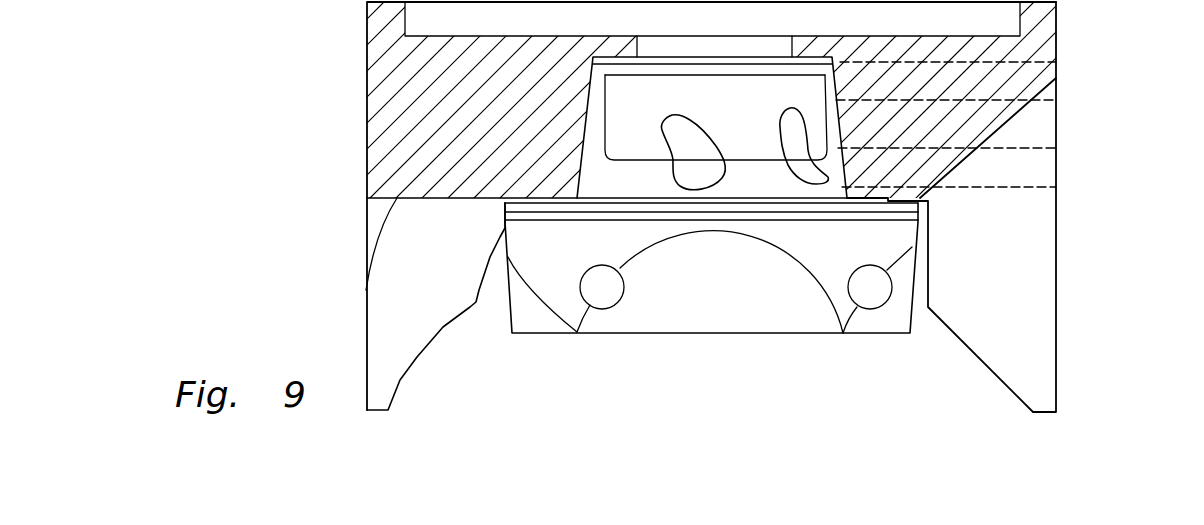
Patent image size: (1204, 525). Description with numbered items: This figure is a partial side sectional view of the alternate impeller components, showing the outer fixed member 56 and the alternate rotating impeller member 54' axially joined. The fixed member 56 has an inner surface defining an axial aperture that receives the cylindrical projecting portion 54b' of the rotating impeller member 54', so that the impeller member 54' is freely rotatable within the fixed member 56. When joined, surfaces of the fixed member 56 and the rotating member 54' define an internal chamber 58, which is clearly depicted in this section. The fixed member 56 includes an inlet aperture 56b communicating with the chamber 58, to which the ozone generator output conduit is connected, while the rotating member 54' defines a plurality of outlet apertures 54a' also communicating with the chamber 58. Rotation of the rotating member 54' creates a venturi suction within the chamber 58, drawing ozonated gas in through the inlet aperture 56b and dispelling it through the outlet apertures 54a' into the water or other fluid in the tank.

The outer fixed member 56 is at (365, 220).
The inlet aperture 56b is at (1058, 123).
The internal chamber 58 is at (590, 160).
The cylindrical projecting portion 54b' is at (744, 139).
The rotating impeller member 54' is at (711, 290).
The outlet apertures 54a' is at (762, 326).